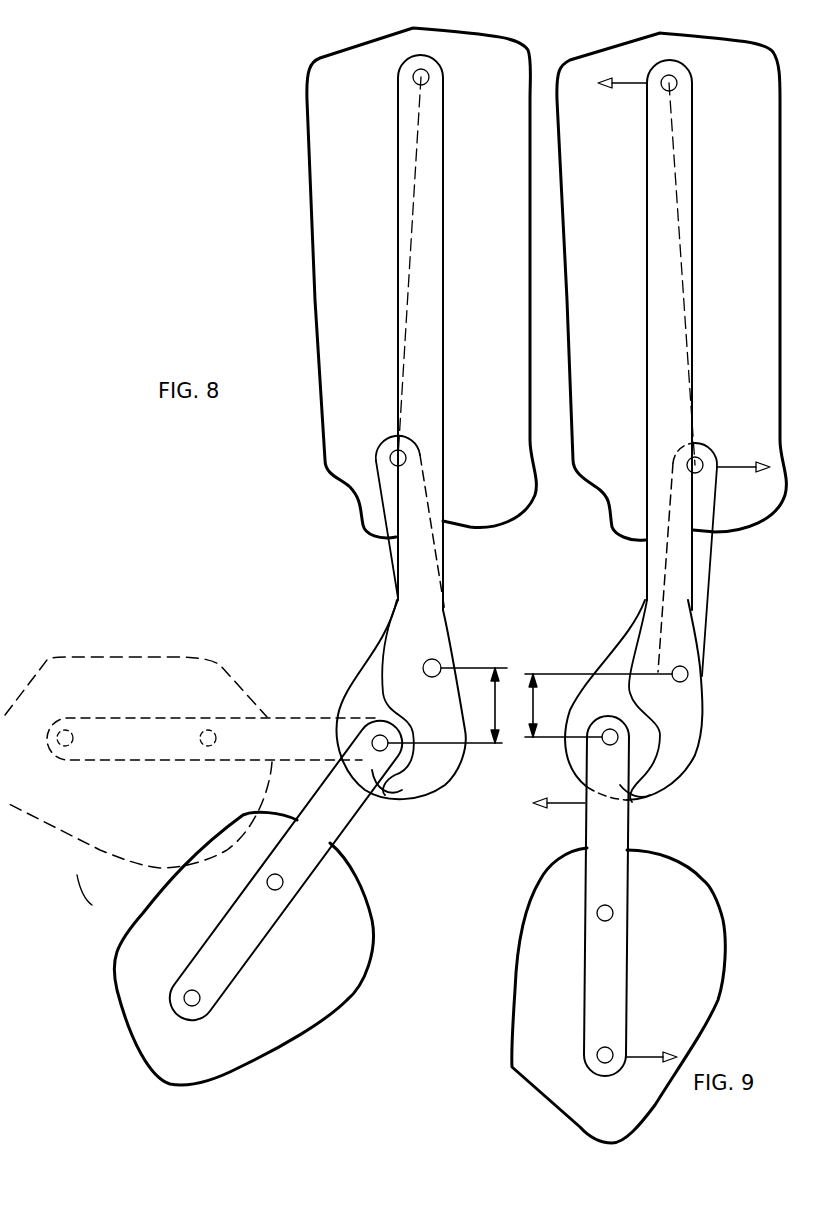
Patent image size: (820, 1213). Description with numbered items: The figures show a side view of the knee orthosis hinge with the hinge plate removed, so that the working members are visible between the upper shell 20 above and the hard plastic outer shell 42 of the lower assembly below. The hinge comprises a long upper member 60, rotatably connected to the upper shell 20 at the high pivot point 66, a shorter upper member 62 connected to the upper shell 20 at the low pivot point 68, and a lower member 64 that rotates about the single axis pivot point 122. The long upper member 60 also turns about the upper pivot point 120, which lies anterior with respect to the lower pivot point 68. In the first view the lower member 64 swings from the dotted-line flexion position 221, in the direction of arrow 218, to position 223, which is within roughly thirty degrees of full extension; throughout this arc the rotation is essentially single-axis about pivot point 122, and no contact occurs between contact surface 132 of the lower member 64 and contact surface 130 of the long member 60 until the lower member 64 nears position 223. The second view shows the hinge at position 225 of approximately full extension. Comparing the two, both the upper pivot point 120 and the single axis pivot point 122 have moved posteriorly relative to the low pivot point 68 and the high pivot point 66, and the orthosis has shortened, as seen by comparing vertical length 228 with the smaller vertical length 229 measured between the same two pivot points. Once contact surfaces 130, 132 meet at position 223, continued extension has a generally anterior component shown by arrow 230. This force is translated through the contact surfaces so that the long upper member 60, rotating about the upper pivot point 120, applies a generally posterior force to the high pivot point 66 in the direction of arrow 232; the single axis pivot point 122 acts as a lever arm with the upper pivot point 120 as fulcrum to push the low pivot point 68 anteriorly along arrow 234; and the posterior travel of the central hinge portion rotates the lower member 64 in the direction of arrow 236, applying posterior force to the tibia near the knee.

In FIG. 8, the upper shell 20 is at (523, 345).
In FIG. 9, the upper shell 20 is at (590, 392).
In FIG. 8, the outer shell 42 is at (240, 1047).
In FIG. 9, the outer shell 42 is at (530, 1053).
In FIG. 8, the long upper member 60 is at (438, 252).
In FIG. 9, the long upper member 60 is at (660, 254).
In FIG. 8, the shorter upper member 62 is at (395, 490).
In FIG. 9, the shorter upper member 62 is at (700, 545).
In FIG. 8, the lower member 64 is at (258, 920).
In FIG. 9, the lower member 64 is at (595, 1015).
In FIG. 8, the high pivot point 66 is at (428, 70).
In FIG. 9, the high pivot point 66 is at (672, 80).
In FIG. 8, the low pivot point 68 is at (390, 465).
In FIG. 9, the low pivot point 68 is at (687, 463).
In FIG. 8, the upper pivot point 120 is at (437, 661).
In FIG. 9, the upper pivot point 120 is at (690, 674).
In FIG. 8, the single axis pivot point 122 is at (372, 742).
In FIG. 9, the single axis pivot point 122 is at (623, 730).
In FIG. 8, the contact surface 130 is at (353, 800).
In FIG. 9, the contact surface 130 is at (620, 795).
In FIG. 8, the contact surface 132 is at (398, 789).
In FIG. 9, the contact surface 132 is at (630, 792).
In FIG. 8, the arrow 218 is at (105, 920).
In FIG. 8, the flexion position 221 is at (84, 635).
In FIG. 8, the position 223 is at (112, 1031).
In FIG. 9, the position of full extension 225 is at (535, 1125).
In FIG. 8, the vertical length 228 is at (495, 705).
In FIG. 9, the vertical length 229 is at (535, 700).
In FIG. 9, the arrow 230 is at (643, 1060).
In FIG. 9, the arrow 232 is at (637, 80).
In FIG. 9, the arrow 234 is at (735, 468).
In FIG. 9, the arrow 236 is at (575, 808).